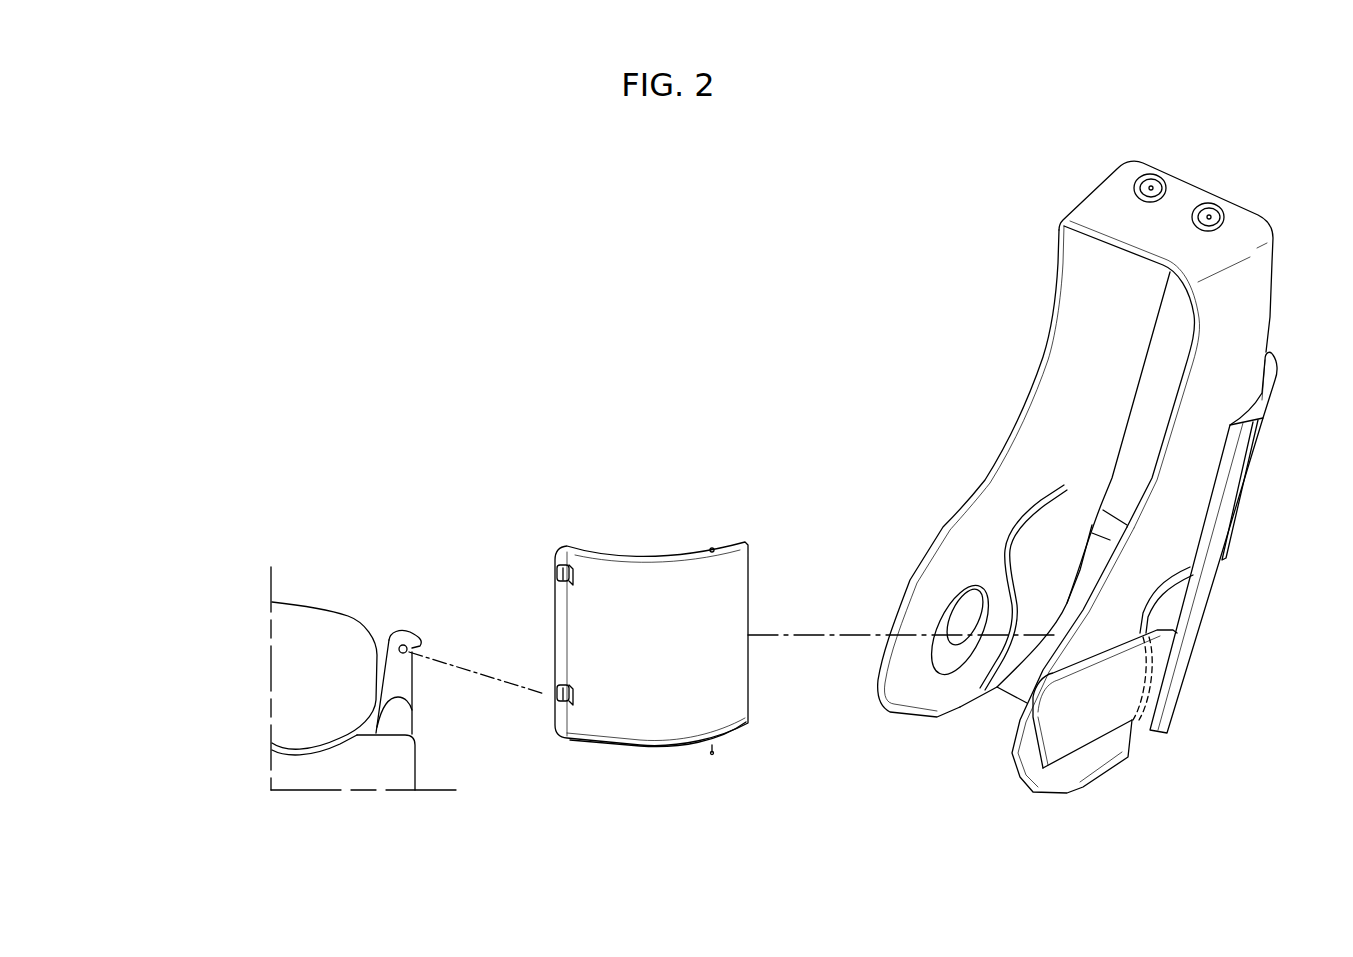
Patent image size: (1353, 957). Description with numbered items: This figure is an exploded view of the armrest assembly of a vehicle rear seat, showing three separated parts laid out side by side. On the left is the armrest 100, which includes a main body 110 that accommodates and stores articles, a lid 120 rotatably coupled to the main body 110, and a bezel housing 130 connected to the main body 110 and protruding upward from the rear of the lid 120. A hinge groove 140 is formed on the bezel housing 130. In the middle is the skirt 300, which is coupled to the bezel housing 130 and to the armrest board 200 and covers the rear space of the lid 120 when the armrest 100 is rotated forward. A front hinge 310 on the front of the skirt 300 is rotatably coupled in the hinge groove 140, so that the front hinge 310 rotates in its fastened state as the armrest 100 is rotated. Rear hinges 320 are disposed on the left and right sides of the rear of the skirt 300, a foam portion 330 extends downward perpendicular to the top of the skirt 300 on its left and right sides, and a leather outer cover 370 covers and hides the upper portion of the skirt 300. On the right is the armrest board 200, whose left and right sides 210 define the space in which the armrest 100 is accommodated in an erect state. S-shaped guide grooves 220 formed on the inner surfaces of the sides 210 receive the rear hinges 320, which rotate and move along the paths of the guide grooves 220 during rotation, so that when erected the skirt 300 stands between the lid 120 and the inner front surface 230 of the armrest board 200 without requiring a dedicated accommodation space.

The armrest 100 is at (268, 650).
The main body 110 is at (326, 778).
The lid 120 is at (316, 630).
The bezel housing 130 is at (401, 721).
The hinge groove 140 is at (402, 636).
The armrest board 200 is at (1192, 200).
The sides 210 is at (988, 548).
The guide grooves 220 is at (1060, 493).
The inner front surface 230 is at (1083, 570).
The skirt 300 is at (588, 745).
The front hinge 310 is at (559, 565).
The rear hinges 320 is at (712, 547).
The foam portion 330 is at (662, 747).
The outer cover 370 is at (645, 576).